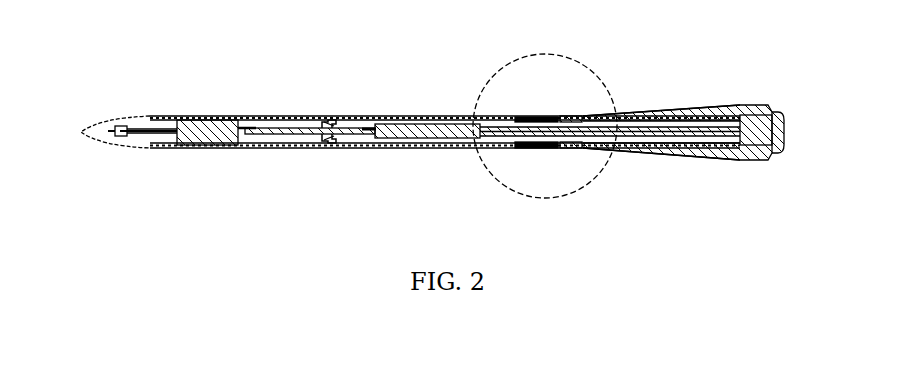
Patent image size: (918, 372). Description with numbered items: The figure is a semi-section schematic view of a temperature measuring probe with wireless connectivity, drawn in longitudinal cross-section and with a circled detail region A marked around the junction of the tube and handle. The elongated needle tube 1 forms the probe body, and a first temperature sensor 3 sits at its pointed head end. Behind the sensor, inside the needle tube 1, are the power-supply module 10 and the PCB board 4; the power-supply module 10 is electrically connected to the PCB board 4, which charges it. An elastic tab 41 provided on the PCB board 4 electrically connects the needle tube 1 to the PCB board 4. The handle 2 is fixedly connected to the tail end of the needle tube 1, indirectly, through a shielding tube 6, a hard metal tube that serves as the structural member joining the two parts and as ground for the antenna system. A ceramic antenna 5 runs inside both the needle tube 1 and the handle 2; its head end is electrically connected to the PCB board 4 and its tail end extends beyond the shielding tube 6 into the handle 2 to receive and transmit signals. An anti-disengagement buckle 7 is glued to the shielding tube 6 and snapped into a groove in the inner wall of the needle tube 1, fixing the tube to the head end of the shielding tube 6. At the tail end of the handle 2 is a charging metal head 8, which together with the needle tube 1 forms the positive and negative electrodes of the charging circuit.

The needle tube 1 is at (172, 118).
The handle 2 is at (707, 110).
The first temperature sensor 3 is at (124, 121).
The PCB board 4 is at (300, 128).
The ceramic antenna 5 is at (724, 160).
The shielding tube 6 is at (652, 115).
The anti-disengagement buckle 7 is at (540, 120).
The charging metal head 8 is at (766, 107).
The power-supply module 10 is at (219, 122).
The elastic tab 41 is at (330, 120).
The detail region A is at (568, 58).